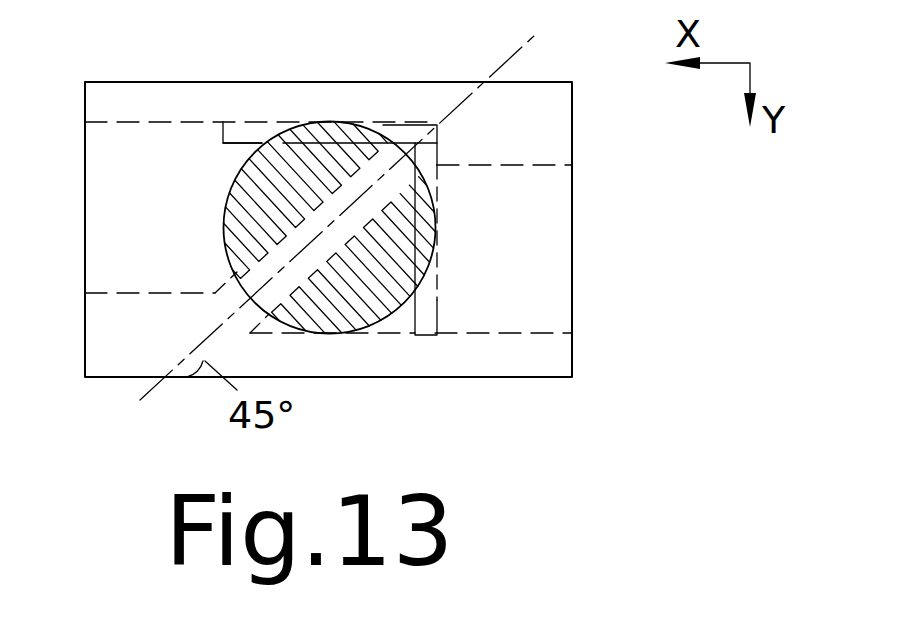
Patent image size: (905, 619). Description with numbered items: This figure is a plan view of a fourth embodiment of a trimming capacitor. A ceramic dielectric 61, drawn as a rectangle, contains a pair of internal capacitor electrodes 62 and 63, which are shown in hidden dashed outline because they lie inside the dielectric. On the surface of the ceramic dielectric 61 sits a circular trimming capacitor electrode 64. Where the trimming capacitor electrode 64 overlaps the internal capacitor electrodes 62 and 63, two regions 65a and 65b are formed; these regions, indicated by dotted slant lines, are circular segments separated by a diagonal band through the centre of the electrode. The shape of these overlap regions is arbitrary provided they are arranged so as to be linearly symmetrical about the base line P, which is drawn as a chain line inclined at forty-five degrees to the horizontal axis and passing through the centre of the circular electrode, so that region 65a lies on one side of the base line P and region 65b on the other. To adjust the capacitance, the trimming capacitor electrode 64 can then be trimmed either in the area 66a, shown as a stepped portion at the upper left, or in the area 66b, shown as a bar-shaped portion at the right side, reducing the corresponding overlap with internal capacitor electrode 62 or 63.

The ceramic dielectric 61 is at (552, 97).
The internal capacitor electrode 62 is at (147, 135).
The internal capacitor electrode 63 is at (506, 328).
The trimming capacitor electrode 64 is at (330, 123).
The overlap region 65a is at (232, 223).
The overlap region 65b is at (329, 325).
The trimming area 66a is at (258, 121).
The trimming area 66b is at (435, 270).
The base line P is at (488, 72).